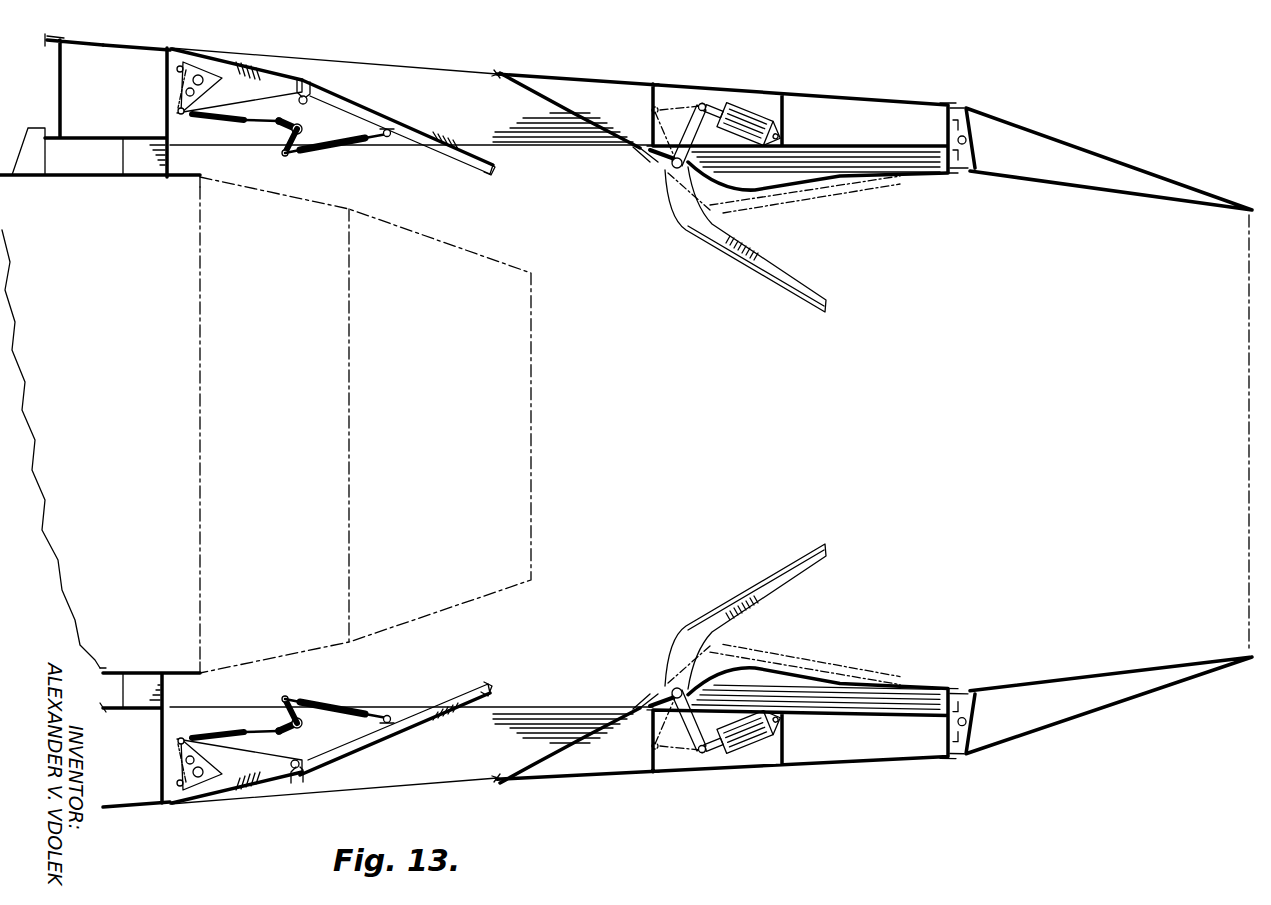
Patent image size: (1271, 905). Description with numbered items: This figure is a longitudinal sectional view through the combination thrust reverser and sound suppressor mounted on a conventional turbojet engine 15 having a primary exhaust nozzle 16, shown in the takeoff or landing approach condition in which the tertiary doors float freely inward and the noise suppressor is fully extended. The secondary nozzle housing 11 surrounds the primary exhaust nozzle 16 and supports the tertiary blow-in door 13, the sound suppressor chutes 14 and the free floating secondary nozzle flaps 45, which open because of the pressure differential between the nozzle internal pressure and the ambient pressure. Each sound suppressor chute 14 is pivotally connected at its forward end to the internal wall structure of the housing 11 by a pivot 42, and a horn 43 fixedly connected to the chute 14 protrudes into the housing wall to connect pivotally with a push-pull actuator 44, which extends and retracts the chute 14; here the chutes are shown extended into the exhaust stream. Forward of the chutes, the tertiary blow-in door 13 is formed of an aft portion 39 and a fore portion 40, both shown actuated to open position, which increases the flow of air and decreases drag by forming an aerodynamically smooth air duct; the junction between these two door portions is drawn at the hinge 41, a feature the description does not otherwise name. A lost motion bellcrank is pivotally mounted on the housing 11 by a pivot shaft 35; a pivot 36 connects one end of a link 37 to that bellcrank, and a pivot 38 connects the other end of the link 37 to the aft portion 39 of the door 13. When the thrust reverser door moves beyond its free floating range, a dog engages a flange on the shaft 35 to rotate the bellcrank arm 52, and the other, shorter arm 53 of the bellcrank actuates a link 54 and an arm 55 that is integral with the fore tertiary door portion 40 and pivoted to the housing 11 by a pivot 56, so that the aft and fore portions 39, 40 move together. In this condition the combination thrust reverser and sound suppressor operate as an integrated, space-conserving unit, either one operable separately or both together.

The housing 11 is at (878, 98).
The tertiary blow-in door 13 is at (323, 82).
The sound suppressor chute 14 is at (806, 302).
The turbojet engine 15 is at (135, 406).
The primary exhaust nozzle 16 is at (440, 431).
The pivot shaft 35 is at (303, 128).
The pivot 36 is at (290, 155).
The link 37 is at (340, 146).
The pivot 38 is at (389, 138).
The aft portion 39 is at (460, 154).
The fore portion 40 is at (262, 70).
The flap hinge 41 is at (310, 93).
The pivot 42 is at (668, 172).
The horn 43 is at (692, 138).
The push-pull actuator 44 is at (752, 102).
The secondary nozzle flap 45 is at (1070, 146).
The bellcrank arm 52 is at (287, 153).
The shorter arm 53 is at (281, 118).
The link 54 is at (235, 122).
The arm 55 is at (217, 86).
The pivot 56 is at (176, 70).